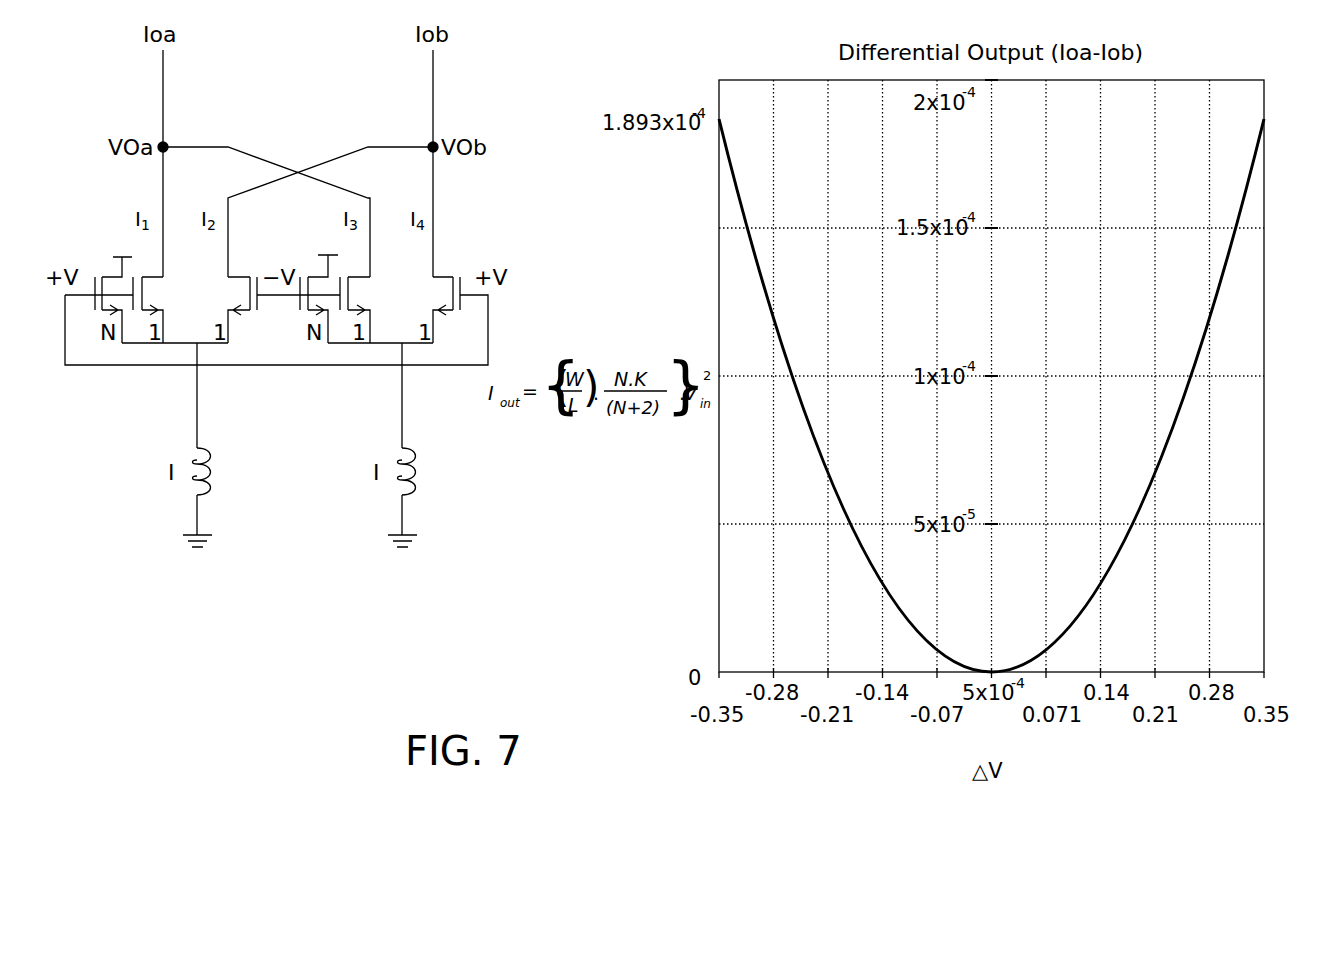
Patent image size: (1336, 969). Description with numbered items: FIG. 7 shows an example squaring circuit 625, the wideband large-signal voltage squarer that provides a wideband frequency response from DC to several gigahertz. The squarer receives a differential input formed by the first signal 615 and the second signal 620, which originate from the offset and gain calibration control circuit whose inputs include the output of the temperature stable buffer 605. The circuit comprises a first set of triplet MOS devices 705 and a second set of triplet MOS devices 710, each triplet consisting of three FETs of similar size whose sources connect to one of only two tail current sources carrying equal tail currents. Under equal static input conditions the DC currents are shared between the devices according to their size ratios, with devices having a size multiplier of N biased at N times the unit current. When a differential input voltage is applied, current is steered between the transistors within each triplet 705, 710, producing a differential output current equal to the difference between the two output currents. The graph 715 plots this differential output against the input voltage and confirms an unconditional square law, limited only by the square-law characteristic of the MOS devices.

The temperature stable buffer 605 is at (102, 256).
The first signal 615 is at (163, 80).
The second signal 620 is at (433, 80).
The wideband large-signal voltage squarer 625 is at (300, 130).
The first set of triplet MOS devices 705 is at (190, 318).
The second set of triplet MOS devices 710 is at (395, 318).
The graph 715 is at (1226, 262).